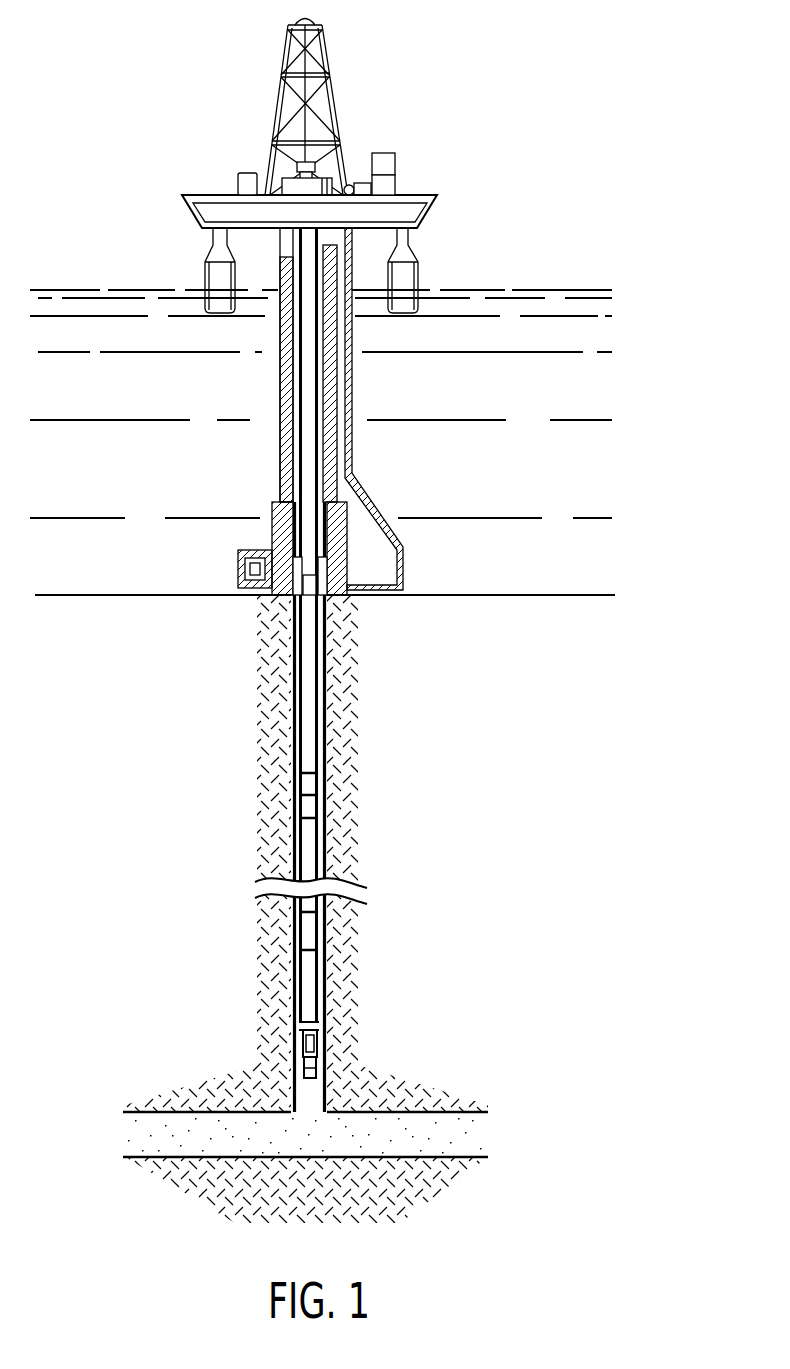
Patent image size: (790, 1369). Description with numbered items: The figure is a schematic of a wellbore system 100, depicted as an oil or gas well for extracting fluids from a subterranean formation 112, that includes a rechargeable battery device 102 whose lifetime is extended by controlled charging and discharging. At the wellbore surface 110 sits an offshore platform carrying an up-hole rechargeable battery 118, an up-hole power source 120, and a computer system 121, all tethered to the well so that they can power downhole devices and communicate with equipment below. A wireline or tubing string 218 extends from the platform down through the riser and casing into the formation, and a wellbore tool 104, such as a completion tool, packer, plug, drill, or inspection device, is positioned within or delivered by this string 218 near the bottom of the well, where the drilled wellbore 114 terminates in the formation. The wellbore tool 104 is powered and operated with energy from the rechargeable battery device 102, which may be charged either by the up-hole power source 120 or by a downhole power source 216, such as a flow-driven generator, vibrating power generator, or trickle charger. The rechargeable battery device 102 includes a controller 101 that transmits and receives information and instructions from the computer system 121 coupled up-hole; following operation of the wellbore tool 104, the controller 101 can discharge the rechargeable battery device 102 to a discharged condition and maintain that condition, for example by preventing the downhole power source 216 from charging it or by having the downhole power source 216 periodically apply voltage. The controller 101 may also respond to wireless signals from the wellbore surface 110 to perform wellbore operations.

The wellbore system 100 is at (534, 106).
The wellbore surface 110 is at (450, 218).
The subterranean formation 112 is at (350, 919).
The wellbore 114 is at (320, 1095).
The controller 101 is at (292, 1042).
The rechargeable battery device 102 is at (327, 1020).
The wellbore tool 104 is at (320, 1071).
The downhole power source 216 is at (327, 1048).
The wireline or tubing string 218 is at (320, 845).
The up-hole rechargeable battery 118 is at (388, 190).
The up-hole power source 120 is at (393, 158).
The computer system 121 is at (250, 173).